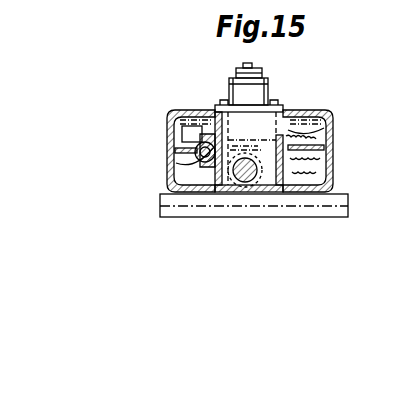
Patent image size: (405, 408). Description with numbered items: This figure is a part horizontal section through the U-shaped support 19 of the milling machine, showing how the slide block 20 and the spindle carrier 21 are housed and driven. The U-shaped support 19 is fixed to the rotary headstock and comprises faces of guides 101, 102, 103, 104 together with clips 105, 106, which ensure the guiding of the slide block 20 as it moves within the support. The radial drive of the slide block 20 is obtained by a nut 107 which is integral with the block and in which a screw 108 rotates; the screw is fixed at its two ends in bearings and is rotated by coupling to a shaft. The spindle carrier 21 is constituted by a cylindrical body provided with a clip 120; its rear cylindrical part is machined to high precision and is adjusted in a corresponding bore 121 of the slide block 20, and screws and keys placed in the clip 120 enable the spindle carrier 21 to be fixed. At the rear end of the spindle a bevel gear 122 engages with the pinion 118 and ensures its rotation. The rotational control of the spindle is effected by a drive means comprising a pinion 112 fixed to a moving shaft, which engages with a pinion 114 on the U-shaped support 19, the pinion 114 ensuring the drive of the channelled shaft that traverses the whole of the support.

The guide face 101 is at (170, 114).
The guide face 102 is at (178, 135).
The screw 108 is at (182, 150).
The nut 107 is at (185, 166).
The U-shaped support 19 is at (332, 135).
The guide face 103 is at (300, 110).
The guide face 104 is at (322, 120).
The pinion 112 is at (330, 170).
The clip 120 is at (214, 104).
The clip 105 is at (213, 108).
The clip 106 is at (280, 108).
The spindle carrier 21 is at (275, 108).
The bore 121 is at (282, 108).
The bevel gear 122 is at (246, 151).
The slide block 20 is at (222, 192).
The pinion 118 is at (228, 200).
The pinion 114 is at (273, 198).